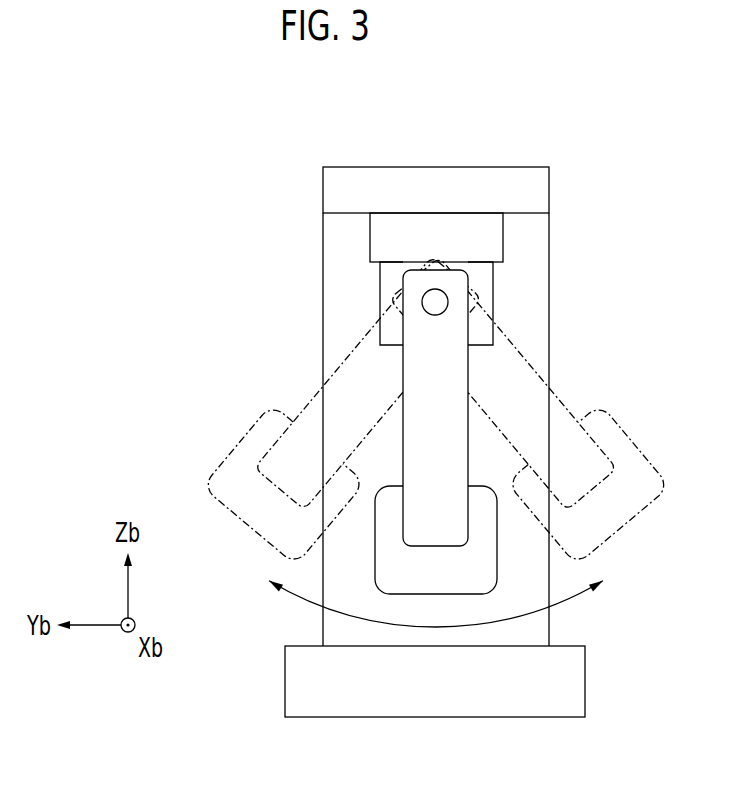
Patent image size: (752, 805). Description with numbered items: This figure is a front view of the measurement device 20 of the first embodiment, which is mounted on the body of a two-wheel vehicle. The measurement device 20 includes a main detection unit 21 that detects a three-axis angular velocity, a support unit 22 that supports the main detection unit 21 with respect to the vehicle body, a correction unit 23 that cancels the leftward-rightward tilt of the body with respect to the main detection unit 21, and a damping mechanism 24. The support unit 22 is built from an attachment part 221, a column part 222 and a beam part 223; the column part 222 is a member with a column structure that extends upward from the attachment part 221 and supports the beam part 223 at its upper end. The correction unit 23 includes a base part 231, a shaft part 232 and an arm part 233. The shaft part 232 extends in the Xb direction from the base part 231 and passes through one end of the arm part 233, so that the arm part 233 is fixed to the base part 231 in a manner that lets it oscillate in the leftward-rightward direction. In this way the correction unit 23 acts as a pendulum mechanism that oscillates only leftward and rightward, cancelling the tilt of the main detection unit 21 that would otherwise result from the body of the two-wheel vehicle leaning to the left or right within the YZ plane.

The measurement device 20 is at (238, 130).
The main detection unit 21 is at (395, 559).
The support unit 22 is at (583, 262).
The attachment part 221 is at (570, 682).
The column part 222 is at (343, 303).
The beam part 223 is at (342, 192).
The correction unit 23 is at (477, 367).
The base part 231 is at (383, 277).
The shaft part 232 is at (435, 302).
The arm part 233 is at (435, 429).
The damping mechanism 24 is at (437, 228).